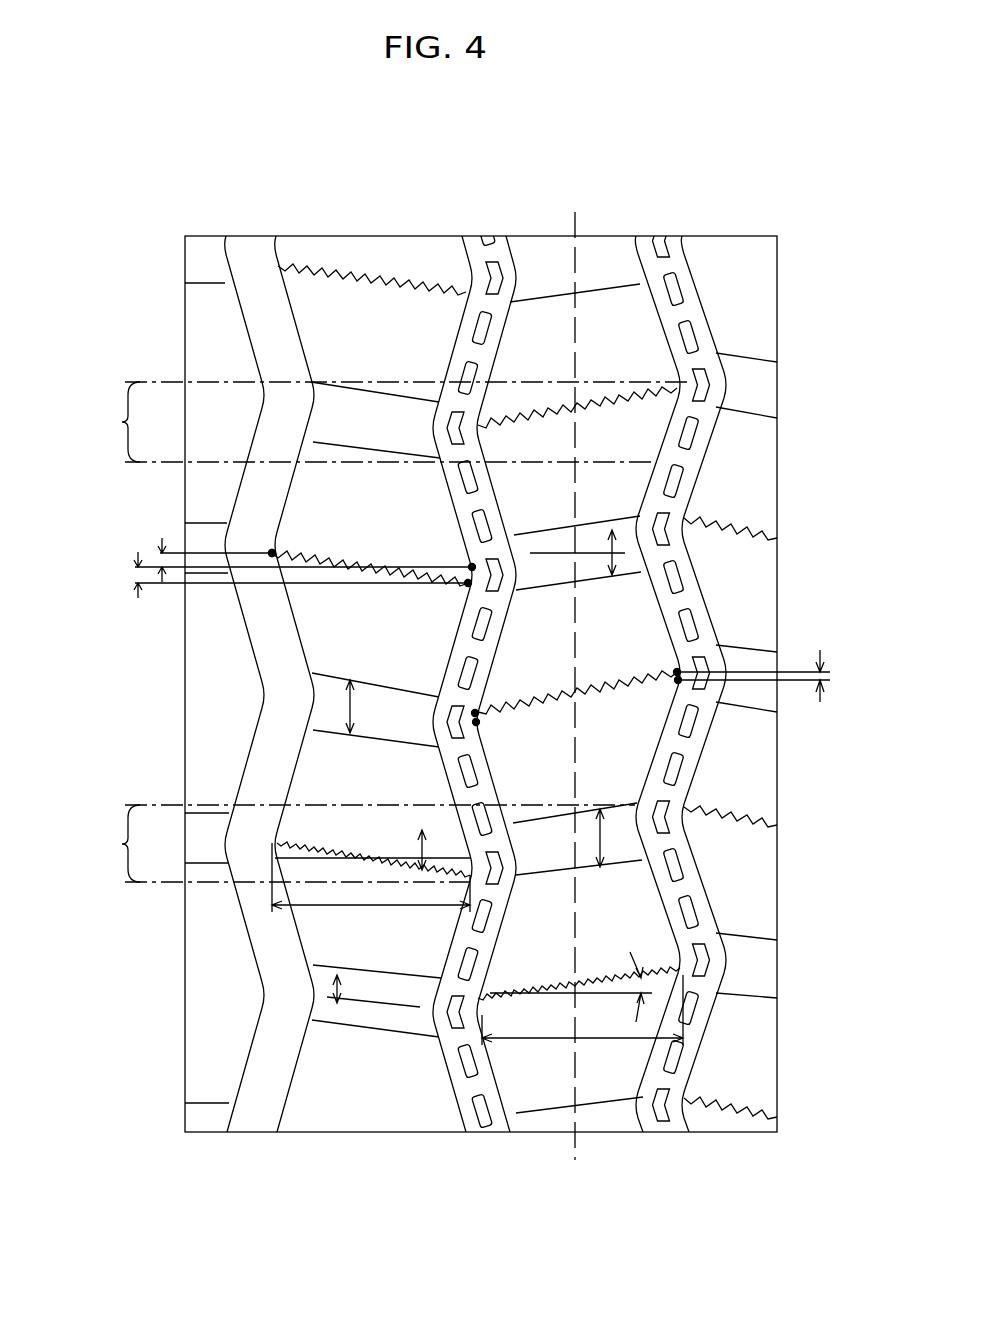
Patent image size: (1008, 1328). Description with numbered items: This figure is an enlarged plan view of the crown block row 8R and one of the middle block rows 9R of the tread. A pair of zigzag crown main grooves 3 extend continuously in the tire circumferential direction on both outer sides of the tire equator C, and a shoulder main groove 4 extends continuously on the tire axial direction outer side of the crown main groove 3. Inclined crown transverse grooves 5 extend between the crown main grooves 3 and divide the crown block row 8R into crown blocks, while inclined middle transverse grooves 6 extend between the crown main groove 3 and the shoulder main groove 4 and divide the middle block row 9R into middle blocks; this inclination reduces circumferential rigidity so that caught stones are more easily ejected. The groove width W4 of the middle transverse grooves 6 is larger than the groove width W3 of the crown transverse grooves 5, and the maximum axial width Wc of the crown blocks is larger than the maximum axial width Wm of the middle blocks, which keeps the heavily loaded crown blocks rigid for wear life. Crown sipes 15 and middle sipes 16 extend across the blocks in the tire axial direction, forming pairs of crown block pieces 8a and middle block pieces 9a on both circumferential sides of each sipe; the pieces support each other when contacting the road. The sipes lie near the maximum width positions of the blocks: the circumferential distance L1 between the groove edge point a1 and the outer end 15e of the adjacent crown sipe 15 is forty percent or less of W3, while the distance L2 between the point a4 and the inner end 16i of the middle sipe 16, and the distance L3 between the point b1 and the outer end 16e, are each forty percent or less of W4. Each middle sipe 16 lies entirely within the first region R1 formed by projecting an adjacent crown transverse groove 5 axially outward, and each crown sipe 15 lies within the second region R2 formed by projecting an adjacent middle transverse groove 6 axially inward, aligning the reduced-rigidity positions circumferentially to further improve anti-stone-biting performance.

The crown main groove 3 is at (481, 260).
The shoulder main groove 4 is at (256, 262).
The crown transverse groove 5 is at (620, 520).
The middle transverse groove 6 is at (396, 1030).
The crown block row 8R is at (549, 290).
The crown block piece 8a is at (628, 348).
The middle block row 9R is at (376, 248).
The middle block piece 9a is at (325, 790).
The crown sipe 15 is at (622, 698).
The outer end of crown sipe 15e is at (475, 713).
The middle sipe 16 is at (300, 272).
The outer end of middle sipe 16e is at (272, 553).
The inner end of middle sipe 16i is at (468, 583).
The tire equator C is at (575, 673).
The first region R1 is at (356, 843).
The second region R2 is at (382, 422).
The tire circumferential direction distance L1 is at (770, 676).
The tire circumferential direction distance L2 is at (281, 575).
The tire circumferential direction distance L3 is at (160, 548).
The groove width of crown transverse groove W3 is at (602, 838).
The groove width of middle transverse groove W4 is at (350, 705).
The tire axial direction maximum width of middle block Wm is at (347, 905).
The tire axial direction maximum width of crown block Wc is at (553, 1045).
The tire axial direction outermost side point of inner side groove edge of crown mai a1 is at (437, 747).
The tire axial direction innermost side point of outer side groove edge of crown mai a4 is at (466, 563).
The tire axial direction outermost side point of inner side groove edge of shoulder b1 is at (272, 553).